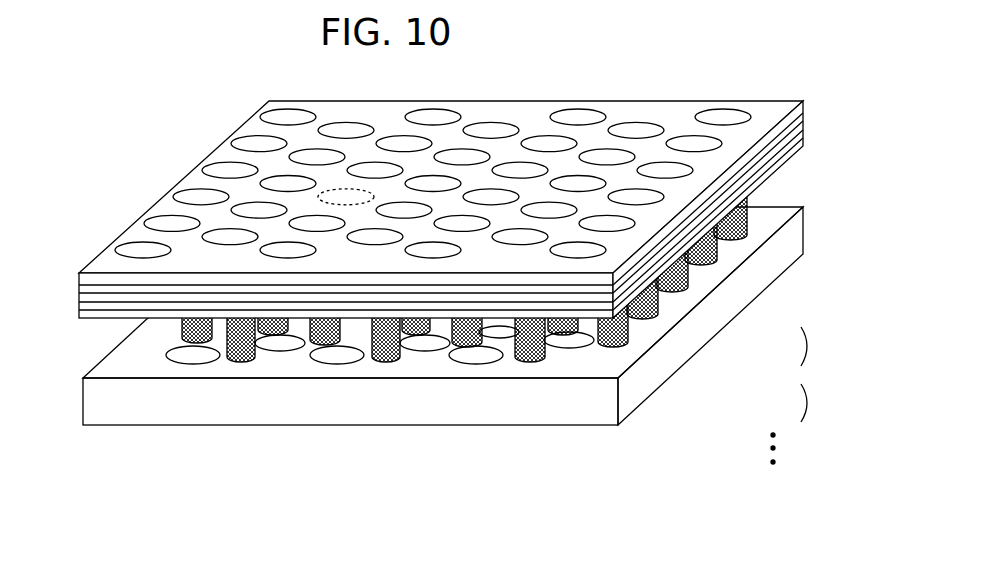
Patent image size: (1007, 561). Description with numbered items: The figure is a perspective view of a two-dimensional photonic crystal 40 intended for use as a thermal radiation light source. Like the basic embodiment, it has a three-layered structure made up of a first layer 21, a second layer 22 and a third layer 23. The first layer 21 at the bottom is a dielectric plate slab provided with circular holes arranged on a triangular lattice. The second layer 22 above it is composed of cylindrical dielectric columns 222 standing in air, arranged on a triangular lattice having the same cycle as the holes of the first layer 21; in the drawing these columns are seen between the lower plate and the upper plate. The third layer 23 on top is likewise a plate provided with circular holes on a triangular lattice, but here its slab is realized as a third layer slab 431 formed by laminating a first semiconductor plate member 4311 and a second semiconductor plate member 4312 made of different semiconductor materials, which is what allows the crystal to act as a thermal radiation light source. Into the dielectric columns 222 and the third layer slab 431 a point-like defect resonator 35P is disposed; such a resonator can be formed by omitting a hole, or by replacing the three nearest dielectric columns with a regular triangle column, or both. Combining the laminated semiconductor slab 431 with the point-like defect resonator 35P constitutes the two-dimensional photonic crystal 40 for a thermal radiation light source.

The first layer 21 is at (66, 400).
The second layer 22 is at (66, 345).
The third layer 23 is at (66, 298).
The point-like defect resonator 35P is at (326, 190).
The dielectric column 222 is at (722, 254).
The third layer slab 431 is at (811, 395).
The first semiconductor plate member 4311 is at (668, 298).
The second semiconductor plate member 4312 is at (648, 317).
The two-dimensional photonic crystal for a thermal radiation light source 40 is at (650, 471).